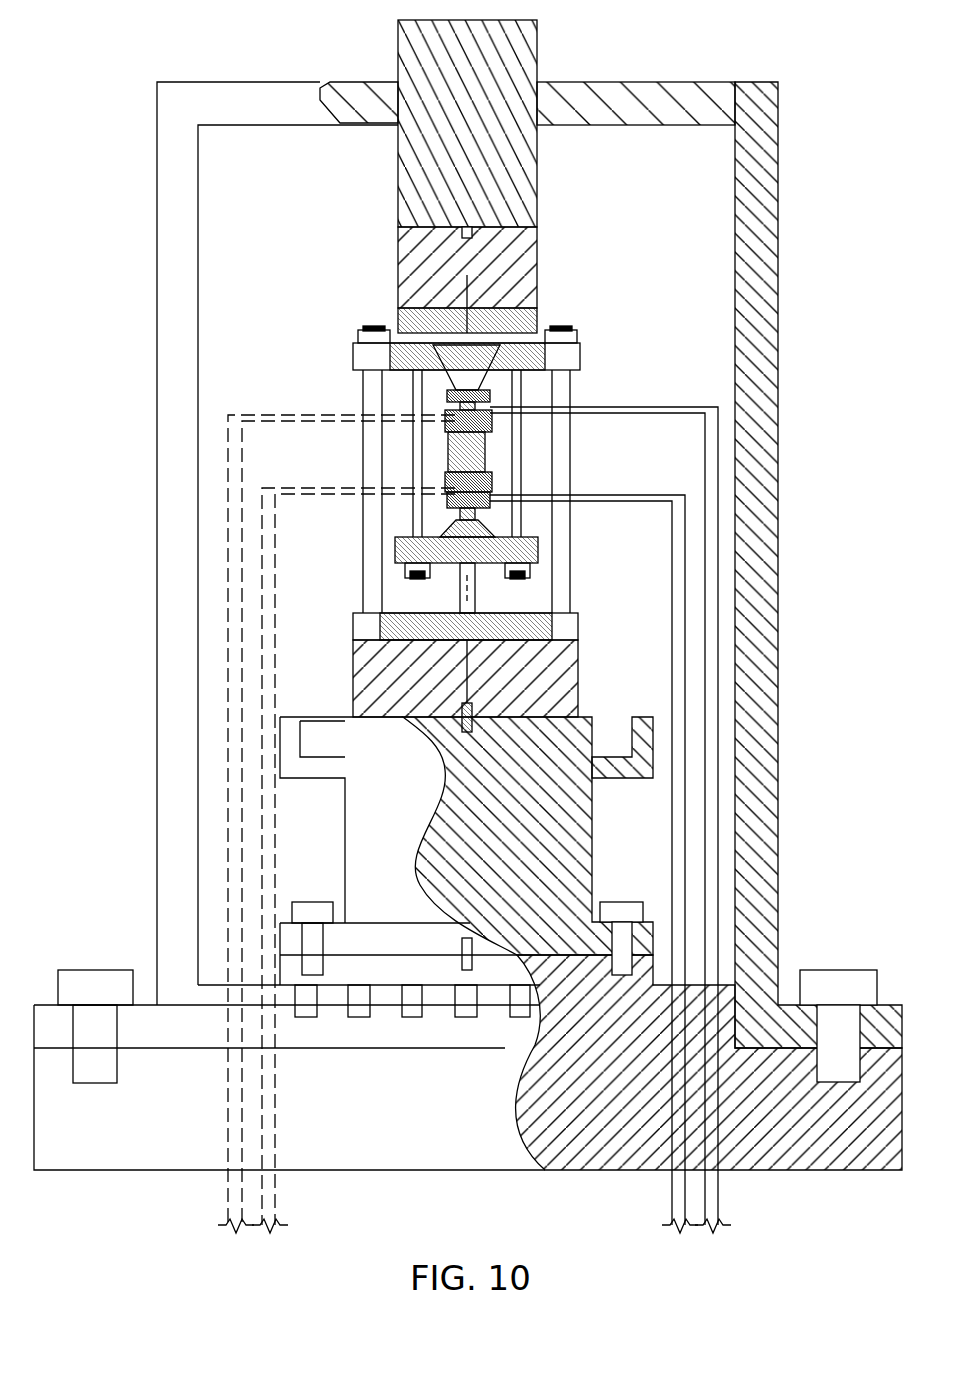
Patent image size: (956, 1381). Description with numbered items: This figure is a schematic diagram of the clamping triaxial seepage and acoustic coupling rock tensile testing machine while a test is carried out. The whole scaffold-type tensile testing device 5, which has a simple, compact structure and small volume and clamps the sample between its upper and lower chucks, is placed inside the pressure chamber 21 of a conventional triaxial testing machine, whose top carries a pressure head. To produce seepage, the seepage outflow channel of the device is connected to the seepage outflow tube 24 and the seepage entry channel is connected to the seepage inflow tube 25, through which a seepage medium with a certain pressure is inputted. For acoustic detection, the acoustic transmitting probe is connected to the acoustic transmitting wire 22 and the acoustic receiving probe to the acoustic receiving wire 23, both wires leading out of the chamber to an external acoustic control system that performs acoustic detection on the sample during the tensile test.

The scaffold-type tensile testing device 5 is at (563, 332).
The pressure chamber 21 is at (760, 360).
The acoustic transmitting wire 22 is at (284, 414).
The acoustic receiving wire 23 is at (284, 489).
The seepage outflow tube 24 is at (617, 407).
The seepage inflow tube 25 is at (617, 495).